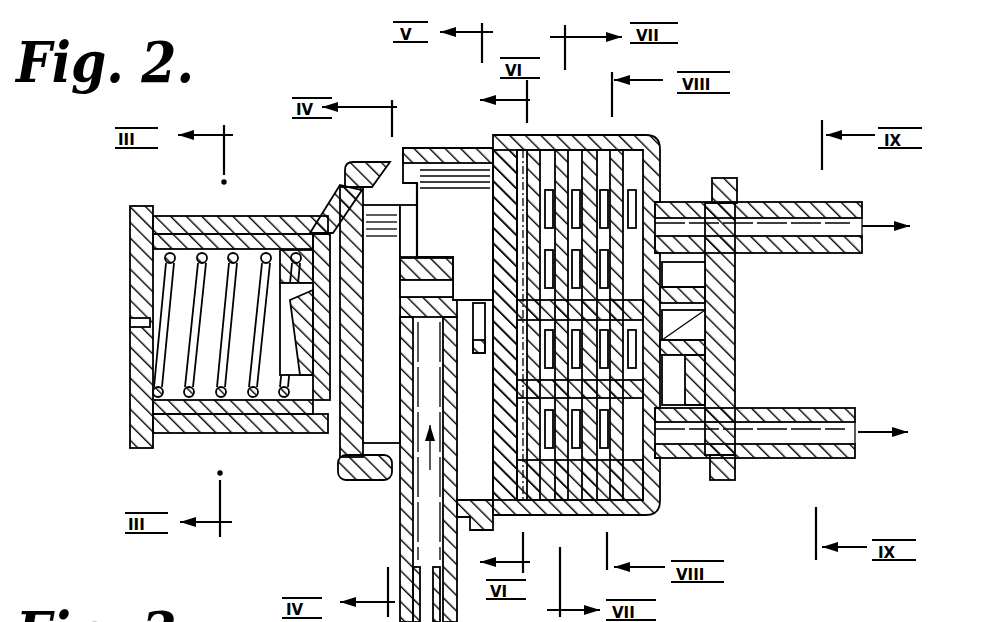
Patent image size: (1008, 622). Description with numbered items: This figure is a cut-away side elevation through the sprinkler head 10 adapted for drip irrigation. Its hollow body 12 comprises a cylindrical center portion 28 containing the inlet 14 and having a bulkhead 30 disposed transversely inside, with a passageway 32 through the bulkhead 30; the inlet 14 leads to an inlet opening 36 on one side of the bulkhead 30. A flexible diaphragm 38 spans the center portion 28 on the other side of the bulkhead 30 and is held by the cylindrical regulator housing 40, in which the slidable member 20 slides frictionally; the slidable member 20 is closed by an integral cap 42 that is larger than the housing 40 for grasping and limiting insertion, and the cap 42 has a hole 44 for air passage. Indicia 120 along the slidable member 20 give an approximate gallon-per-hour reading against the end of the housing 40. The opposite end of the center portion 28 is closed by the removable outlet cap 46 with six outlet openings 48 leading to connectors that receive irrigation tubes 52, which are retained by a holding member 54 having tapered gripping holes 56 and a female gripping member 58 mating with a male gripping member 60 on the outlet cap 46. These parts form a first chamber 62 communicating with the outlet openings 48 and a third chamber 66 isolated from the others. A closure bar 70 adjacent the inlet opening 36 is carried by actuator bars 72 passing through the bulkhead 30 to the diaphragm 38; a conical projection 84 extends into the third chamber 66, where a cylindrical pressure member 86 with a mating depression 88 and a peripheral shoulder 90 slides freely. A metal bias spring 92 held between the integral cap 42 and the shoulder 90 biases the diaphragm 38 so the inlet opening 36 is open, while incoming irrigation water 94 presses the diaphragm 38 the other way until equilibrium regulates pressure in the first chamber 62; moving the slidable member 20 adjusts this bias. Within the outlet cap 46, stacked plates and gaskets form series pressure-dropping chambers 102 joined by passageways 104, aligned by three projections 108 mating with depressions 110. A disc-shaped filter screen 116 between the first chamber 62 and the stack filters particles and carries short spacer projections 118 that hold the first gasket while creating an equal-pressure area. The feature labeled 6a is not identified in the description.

The sprinkler head 10 is at (338, 488).
The hollow body 12 is at (664, 511).
The inlet 14 is at (402, 540).
The slidable member 20 is at (125, 217).
The cylindrical center portion 28 is at (420, 148).
The bulkhead 30 is at (420, 215).
The passageway 32 is at (447, 274).
The inlet opening 36 is at (453, 327).
The flexible diaphragm 38 is at (340, 208).
The cylindrical regulator housing 40 is at (217, 222).
The integral cap 42 is at (140, 358).
The hole 44 is at (135, 322).
The outlet cap 46 is at (667, 150).
The outlet openings 48 is at (678, 198).
The irrigation tubes 52 is at (842, 457).
The holding member 54 is at (722, 465).
The tapered gripping holes 56 is at (740, 203).
The female gripping member 58 is at (690, 282).
The male gripping member 60 is at (705, 310).
The first chamber 62 is at (446, 224).
The third chamber 66 is at (178, 380).
The sealing member 6a is at (378, 247).
The closure bar 70 is at (480, 355).
The actuator bars 72 is at (378, 317).
The conical projection 84 is at (331, 427).
The pressure member 86 is at (283, 347).
The depression 88 is at (295, 355).
The shoulder 90 is at (300, 233).
The bias spring 92 is at (165, 280).
The irrigation water 94 is at (884, 224).
The chambers 102 is at (632, 502).
The passageways 104 is at (610, 135).
The projections 108 is at (662, 362).
The depressions 110 is at (700, 335).
The filter screen 116 is at (532, 145).
The spacer projections 118 is at (560, 150).
The indicia 120 is at (180, 215).